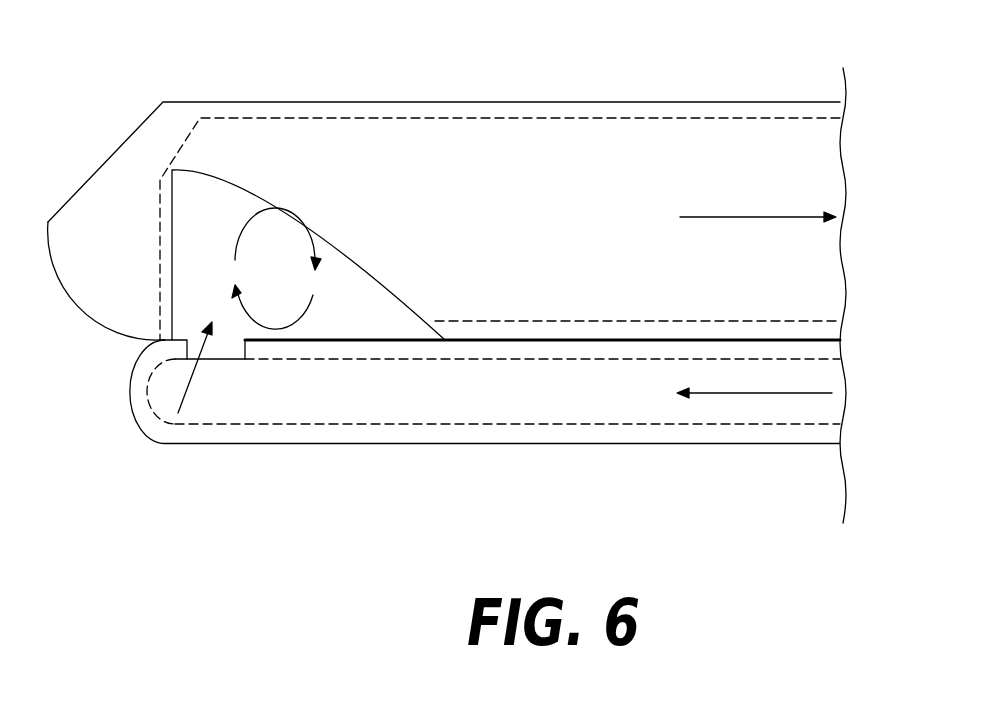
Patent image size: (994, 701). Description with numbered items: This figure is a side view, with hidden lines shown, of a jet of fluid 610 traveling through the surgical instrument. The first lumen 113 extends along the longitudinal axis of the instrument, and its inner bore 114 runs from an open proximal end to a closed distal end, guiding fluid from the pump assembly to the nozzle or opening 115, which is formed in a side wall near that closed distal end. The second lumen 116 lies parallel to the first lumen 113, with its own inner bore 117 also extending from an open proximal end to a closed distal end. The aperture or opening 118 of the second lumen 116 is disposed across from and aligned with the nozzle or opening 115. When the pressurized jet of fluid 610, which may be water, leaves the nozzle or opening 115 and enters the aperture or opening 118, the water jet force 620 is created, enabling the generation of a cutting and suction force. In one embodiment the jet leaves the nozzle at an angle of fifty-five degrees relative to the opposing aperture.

The first lumen 113 is at (425, 445).
The inner bore 114 is at (565, 400).
The nozzle or opening 115 is at (233, 360).
The second lumen 116 is at (510, 103).
The inner bore 117 is at (610, 138).
The aperture or opening 118 is at (200, 230).
The jet of fluid 610 is at (787, 215).
The water jet force 620 is at (260, 223).